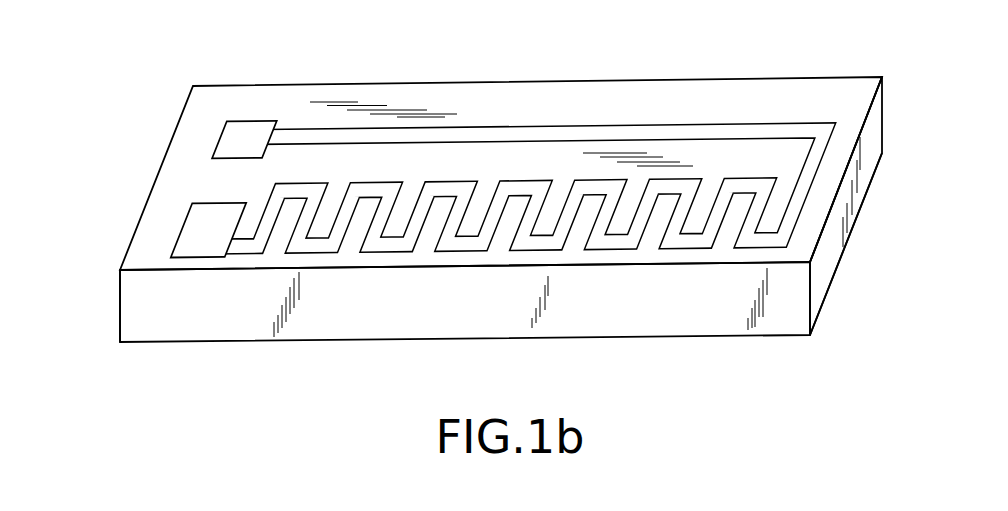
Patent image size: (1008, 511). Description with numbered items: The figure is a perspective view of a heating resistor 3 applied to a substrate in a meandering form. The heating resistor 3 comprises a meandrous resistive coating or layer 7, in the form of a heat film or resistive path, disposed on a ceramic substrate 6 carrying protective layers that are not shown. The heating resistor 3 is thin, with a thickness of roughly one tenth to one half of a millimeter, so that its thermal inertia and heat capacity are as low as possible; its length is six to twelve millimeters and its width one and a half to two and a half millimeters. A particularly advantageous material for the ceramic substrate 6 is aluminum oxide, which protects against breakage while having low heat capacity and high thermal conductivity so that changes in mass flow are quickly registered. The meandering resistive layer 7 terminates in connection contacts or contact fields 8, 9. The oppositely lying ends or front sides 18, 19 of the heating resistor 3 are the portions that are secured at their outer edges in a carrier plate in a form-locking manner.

The heating resistor 3 is at (630, 60).
The ceramic substrate 6 is at (643, 325).
The resistive layer 7 is at (378, 243).
The contact field 8 is at (198, 242).
The contact field 9 is at (255, 127).
The front side 18 is at (113, 311).
The front side 19 is at (864, 223).